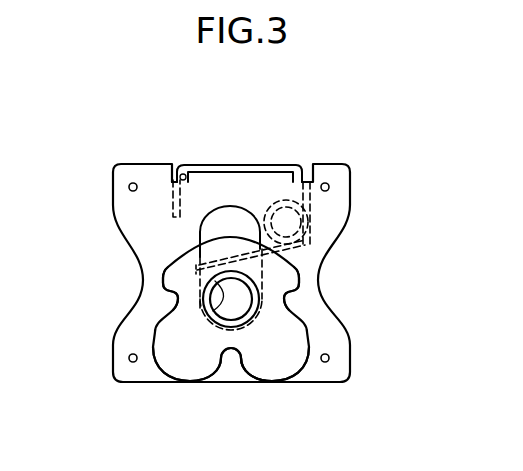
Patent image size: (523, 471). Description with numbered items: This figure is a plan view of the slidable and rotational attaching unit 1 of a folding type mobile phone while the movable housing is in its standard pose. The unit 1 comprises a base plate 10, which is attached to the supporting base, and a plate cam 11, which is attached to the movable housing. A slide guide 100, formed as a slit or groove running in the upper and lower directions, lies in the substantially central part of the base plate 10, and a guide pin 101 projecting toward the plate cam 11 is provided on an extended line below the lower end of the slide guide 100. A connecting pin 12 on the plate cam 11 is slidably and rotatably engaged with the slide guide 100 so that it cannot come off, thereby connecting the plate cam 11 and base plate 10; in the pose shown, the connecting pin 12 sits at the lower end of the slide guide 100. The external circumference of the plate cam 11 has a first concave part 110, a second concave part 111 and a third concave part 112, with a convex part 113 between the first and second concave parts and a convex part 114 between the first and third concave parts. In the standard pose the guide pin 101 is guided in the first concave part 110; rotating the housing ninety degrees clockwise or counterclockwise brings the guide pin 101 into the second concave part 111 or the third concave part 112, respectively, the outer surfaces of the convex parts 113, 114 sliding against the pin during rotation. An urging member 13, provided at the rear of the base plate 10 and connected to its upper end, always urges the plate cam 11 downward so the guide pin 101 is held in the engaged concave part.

The slidable and rotational attaching unit 1 is at (363, 152).
The base plate 10 is at (348, 193).
The plate cam 11 is at (230, 248).
The connecting pin 12 is at (213, 312).
The urging member 13 is at (307, 238).
The slide guide 100 is at (205, 228).
The guide pin 101 is at (243, 357).
The first concave part 110 is at (232, 352).
The second concave part 111 is at (298, 292).
The third concave part 112 is at (175, 295).
The convex part 113 is at (310, 372).
The convex part 114 is at (153, 362).